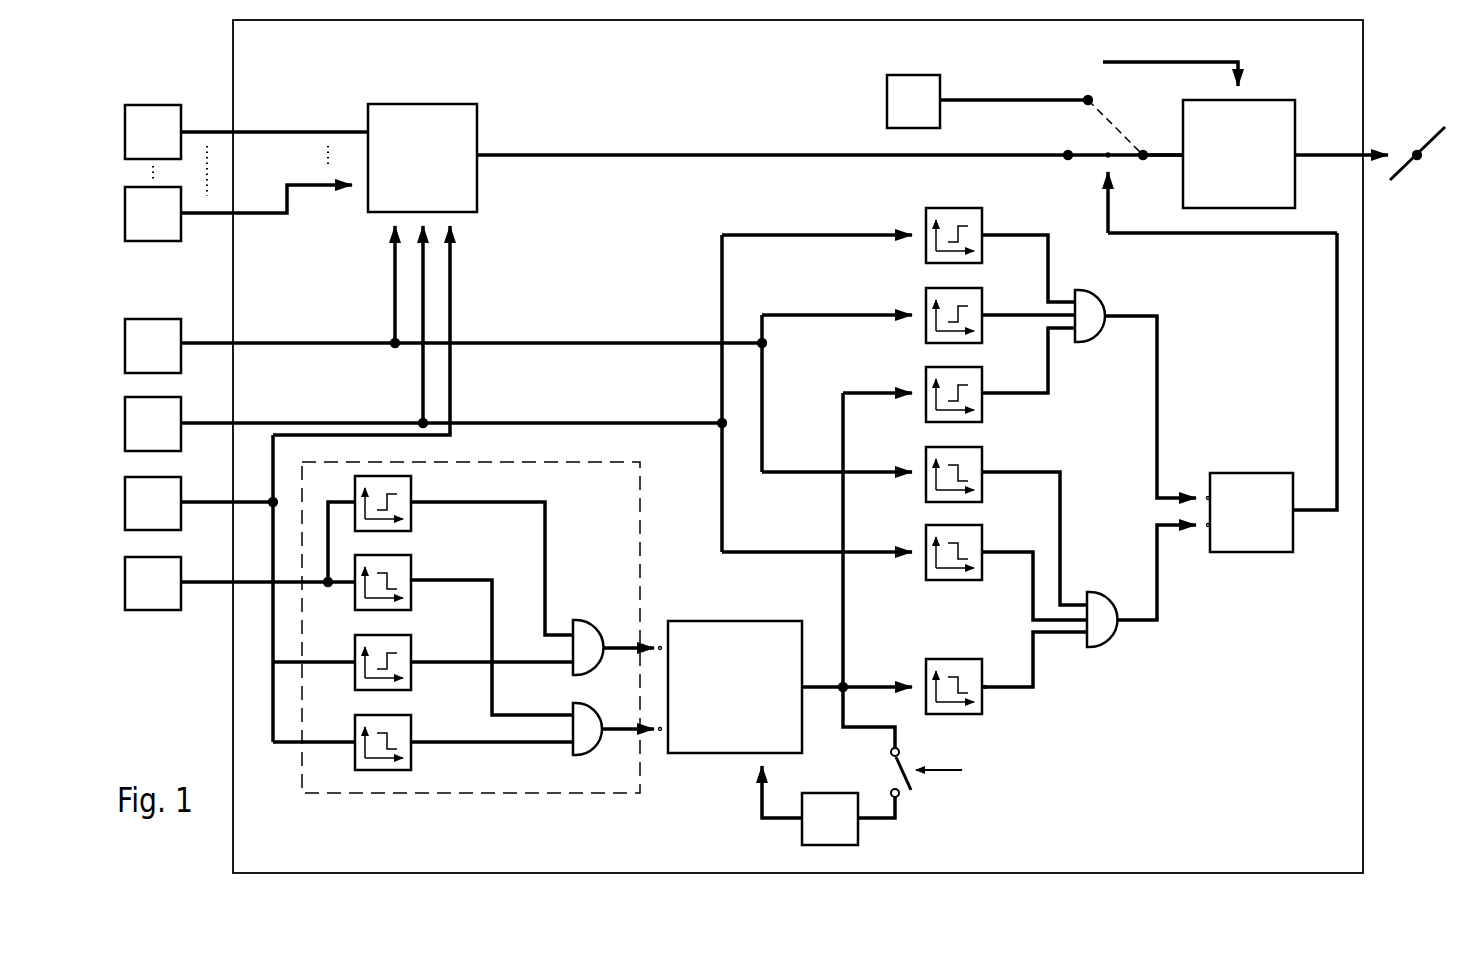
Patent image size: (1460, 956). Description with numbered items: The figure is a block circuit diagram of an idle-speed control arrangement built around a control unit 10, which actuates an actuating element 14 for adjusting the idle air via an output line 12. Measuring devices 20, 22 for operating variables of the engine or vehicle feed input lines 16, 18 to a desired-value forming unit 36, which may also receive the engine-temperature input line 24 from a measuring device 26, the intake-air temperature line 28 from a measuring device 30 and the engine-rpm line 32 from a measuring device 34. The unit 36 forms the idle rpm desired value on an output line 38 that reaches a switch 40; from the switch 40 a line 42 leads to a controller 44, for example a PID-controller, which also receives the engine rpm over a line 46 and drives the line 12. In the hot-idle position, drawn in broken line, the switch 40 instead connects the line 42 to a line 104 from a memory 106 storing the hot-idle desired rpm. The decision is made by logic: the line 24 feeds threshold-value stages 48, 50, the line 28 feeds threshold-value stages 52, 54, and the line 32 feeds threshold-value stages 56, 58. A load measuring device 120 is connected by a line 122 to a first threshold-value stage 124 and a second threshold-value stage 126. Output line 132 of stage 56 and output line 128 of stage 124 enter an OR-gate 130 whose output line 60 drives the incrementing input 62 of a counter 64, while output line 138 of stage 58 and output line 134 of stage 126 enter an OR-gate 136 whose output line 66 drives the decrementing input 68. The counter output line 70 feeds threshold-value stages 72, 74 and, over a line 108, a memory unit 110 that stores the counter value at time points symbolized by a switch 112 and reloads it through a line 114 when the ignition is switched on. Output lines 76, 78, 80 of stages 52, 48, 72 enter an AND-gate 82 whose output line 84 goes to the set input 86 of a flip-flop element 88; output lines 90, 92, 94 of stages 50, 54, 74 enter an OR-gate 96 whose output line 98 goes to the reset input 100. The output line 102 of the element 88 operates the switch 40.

The control unit 10 is at (1363, 30).
The output line 12 is at (1383, 153).
The actuating element 14 is at (1410, 146).
The input line 16 is at (312, 130).
The input line 18 is at (316, 190).
The measuring device 20 is at (140, 115).
The measuring device 22 is at (140, 234).
The input line 24 is at (212, 341).
The measuring device 26 is at (172, 325).
The line 28 is at (210, 421).
The measuring device 30 is at (130, 425).
The line 32 is at (212, 500).
The measuring device 34 is at (130, 502).
The desired-value forming unit 36 is at (478, 110).
The output line 38 is at (690, 153).
The switch 40 is at (1085, 170).
The line 42 is at (1160, 153).
The controller 44 is at (1278, 185).
The line 46 is at (1232, 62).
The threshold-value stage 48 is at (926, 312).
The threshold-value stage 50 is at (926, 470).
The threshold-value stage 52 is at (926, 228).
The threshold-value stage 54 is at (926, 550).
The threshold-value stage 56 is at (411, 658).
The threshold-value stage 58 is at (355, 730).
The output line 60 is at (622, 645).
The incrementing input 62 is at (655, 640).
The counter 64 is at (733, 620).
The output line 66 is at (622, 727).
The decrementing input 68 is at (665, 742).
The output line 70 is at (862, 391).
The threshold-value stage 72 is at (926, 390).
The threshold-value stage 74 is at (982, 705).
The output line 76 is at (1040, 233).
The output line 78 is at (1012, 313).
The output line 80 is at (1025, 391).
The AND-gate 82 is at (1104, 292).
The output line 84 is at (1140, 315).
The set input 86 is at (1208, 496).
The element 88 is at (1275, 480).
The output line 90 is at (1060, 490).
The output line 92 is at (1033, 590).
The output line 94 is at (1035, 660).
The OR-gate 96 is at (1112, 588).
The output line 98 is at (1138, 625).
The reset input 100 is at (1206, 528).
The output line 102 is at (1322, 513).
The line 104 is at (1000, 102).
The memory 106 is at (887, 100).
The line 108 is at (848, 708).
The memory unit 110 is at (802, 832).
The switch 112 is at (905, 797).
The line 114 is at (762, 800).
The measuring device 120 is at (142, 605).
The line 122 is at (200, 585).
The first threshold-value stage 124 is at (411, 482).
The second threshold-value stage 126 is at (411, 572).
The output line 128 is at (540, 500).
The OR-gate 130 is at (580, 614).
The output line 132 is at (522, 660).
The output line 134 is at (492, 580).
The OR-gate 136 is at (560, 754).
The output line 138 is at (460, 740).